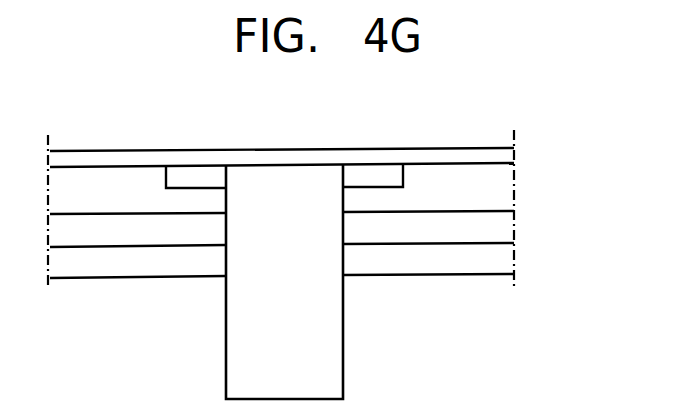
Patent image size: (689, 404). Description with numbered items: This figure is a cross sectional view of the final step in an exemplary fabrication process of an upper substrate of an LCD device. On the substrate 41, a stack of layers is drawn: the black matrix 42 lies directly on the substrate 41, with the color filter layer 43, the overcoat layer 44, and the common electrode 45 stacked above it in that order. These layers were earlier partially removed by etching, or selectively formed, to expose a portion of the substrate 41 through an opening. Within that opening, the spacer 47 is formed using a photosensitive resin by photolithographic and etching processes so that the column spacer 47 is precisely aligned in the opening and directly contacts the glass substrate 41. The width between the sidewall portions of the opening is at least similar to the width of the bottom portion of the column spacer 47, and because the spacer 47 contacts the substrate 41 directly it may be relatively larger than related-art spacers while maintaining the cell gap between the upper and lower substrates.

The substrate 41 is at (504, 155).
The black matrix 42 is at (375, 173).
The color filter layer 43 is at (504, 189).
The overcoat layer 44 is at (504, 225).
The common electrode 45 is at (504, 258).
The spacer 47 is at (330, 357).